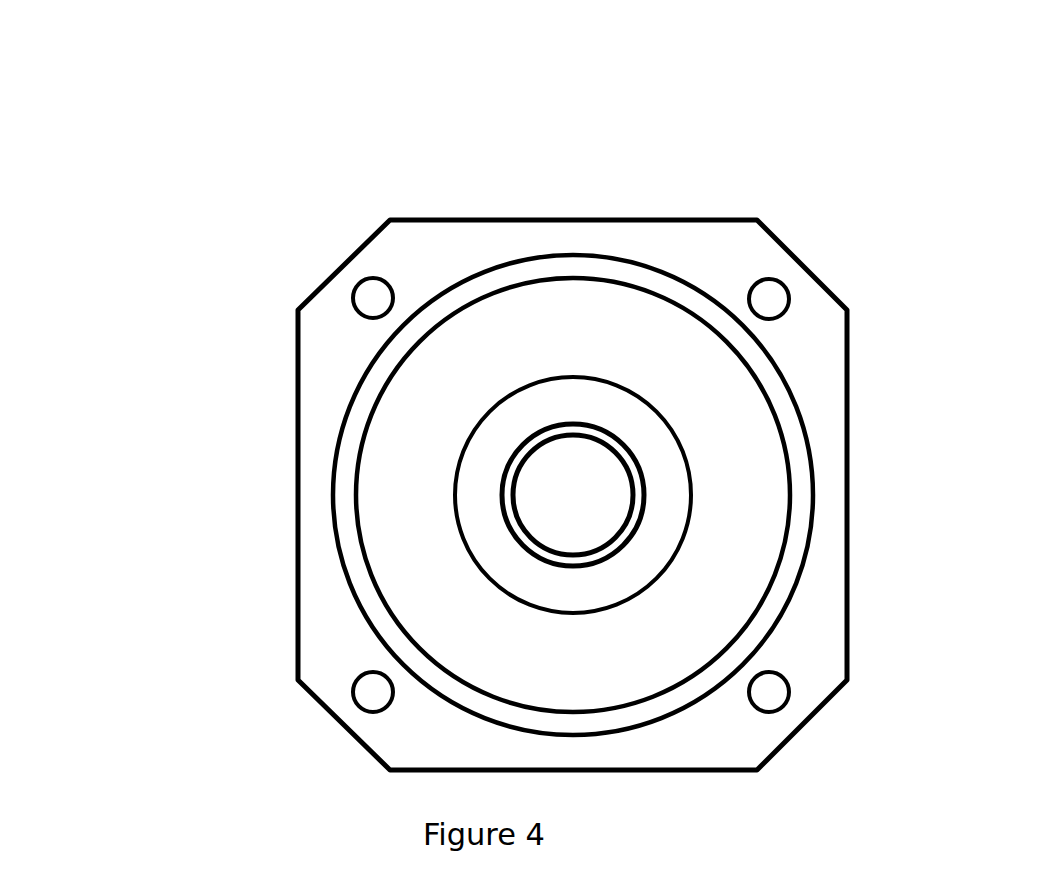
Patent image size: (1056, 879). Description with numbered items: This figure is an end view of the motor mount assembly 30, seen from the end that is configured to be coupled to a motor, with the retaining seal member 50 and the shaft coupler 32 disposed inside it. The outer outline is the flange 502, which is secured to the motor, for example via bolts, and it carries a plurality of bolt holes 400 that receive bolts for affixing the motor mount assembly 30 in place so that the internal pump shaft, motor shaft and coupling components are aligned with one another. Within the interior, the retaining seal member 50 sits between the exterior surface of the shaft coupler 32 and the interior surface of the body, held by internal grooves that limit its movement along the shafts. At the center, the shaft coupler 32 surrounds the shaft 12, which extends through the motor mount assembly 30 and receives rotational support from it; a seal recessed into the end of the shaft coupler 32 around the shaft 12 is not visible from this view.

The flange 502 is at (315, 363).
The bolt holes 400 is at (373, 279).
The motor mount assembly 30 is at (851, 442).
The retaining seal member 50 is at (538, 402).
The shaft coupler 32 is at (637, 489).
The drive shaft 12 is at (595, 480).